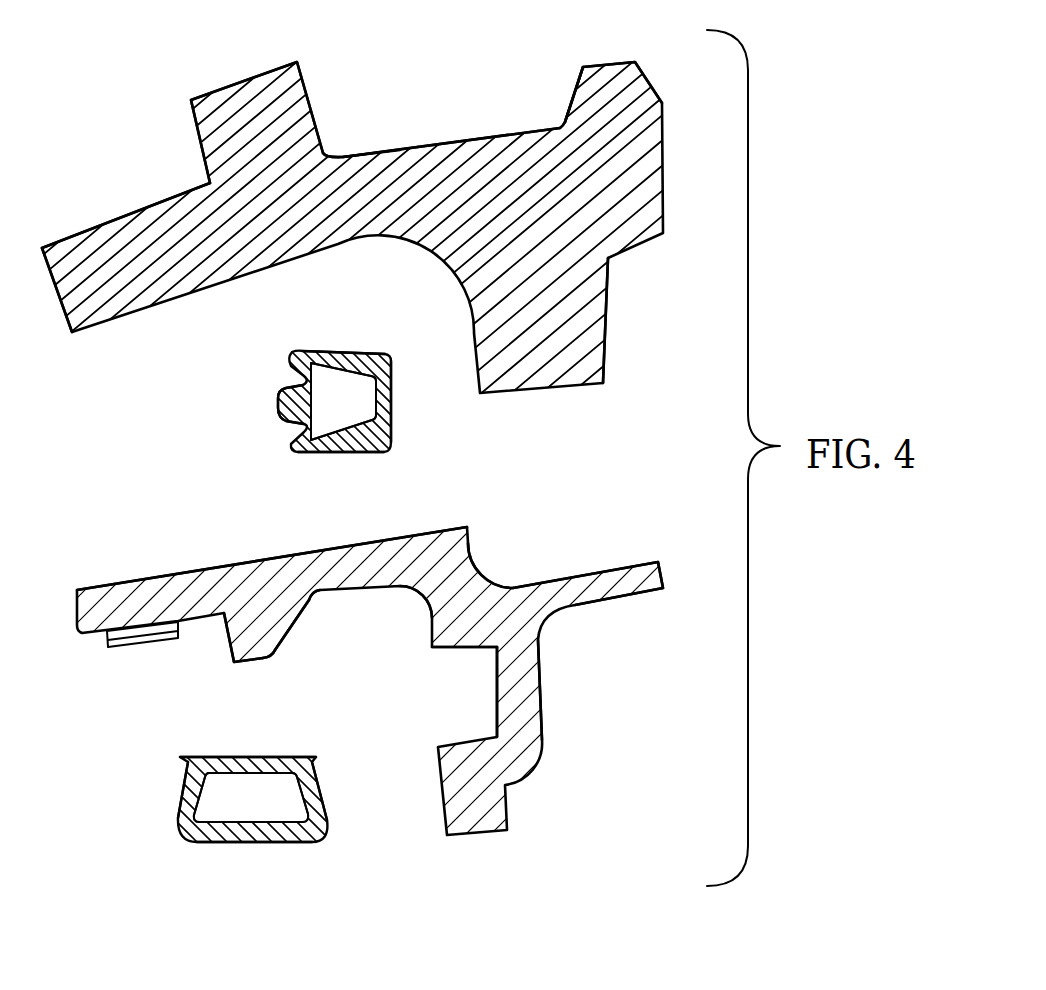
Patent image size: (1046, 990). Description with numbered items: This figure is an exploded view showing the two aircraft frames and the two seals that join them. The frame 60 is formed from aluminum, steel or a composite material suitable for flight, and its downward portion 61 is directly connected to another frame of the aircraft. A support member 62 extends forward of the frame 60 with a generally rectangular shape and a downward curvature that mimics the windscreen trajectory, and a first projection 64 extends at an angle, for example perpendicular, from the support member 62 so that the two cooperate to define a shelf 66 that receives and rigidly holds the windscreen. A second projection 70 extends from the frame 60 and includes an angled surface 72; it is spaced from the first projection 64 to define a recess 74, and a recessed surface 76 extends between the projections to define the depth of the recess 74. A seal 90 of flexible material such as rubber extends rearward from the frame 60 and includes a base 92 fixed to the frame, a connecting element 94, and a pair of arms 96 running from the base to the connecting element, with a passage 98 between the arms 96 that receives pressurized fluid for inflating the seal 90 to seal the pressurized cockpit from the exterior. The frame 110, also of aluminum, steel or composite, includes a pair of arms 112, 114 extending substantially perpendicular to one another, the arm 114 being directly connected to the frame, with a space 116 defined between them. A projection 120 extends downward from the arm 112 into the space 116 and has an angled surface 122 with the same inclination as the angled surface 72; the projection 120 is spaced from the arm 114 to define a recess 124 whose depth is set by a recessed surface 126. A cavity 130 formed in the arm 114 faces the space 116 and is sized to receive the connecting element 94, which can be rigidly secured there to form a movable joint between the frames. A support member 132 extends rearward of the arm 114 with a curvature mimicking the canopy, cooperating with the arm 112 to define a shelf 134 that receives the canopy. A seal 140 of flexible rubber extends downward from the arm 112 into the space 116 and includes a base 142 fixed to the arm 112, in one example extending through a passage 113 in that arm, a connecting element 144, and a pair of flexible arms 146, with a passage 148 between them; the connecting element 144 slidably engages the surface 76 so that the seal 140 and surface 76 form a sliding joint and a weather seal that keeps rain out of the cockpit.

The frame 60 is at (639, 345).
The downward portion 61 is at (598, 288).
The support member 62 is at (62, 287).
The first projection 64 is at (250, 85).
The shelf 66 is at (131, 185).
The second projection 70 is at (610, 70).
The angled surface 72 is at (570, 100).
The recess 74 is at (449, 92).
The recessed surface 76 is at (348, 152).
The seal 90 is at (274, 440).
The base 92 is at (280, 400).
The connecting element 94 is at (392, 398).
The arms 96 is at (353, 360).
The passage 98 is at (390, 447).
The frame 110 is at (547, 781).
The arm 112 is at (255, 578).
The passage 113 is at (88, 650).
The arm 114 is at (518, 692).
The space 116 is at (301, 724).
The projection 120 is at (237, 633).
The angled surface 122 is at (292, 635).
The recess 124 is at (355, 623).
The recessed surface 126 is at (388, 585).
The cavity 130 is at (470, 716).
The support member 132 is at (660, 572).
The shelf 134 is at (511, 553).
The seal 140 is at (160, 850).
The base 142 is at (247, 767).
The connecting element 144 is at (253, 833).
The flexible arms 146 is at (190, 797).
The passage 148 is at (312, 840).